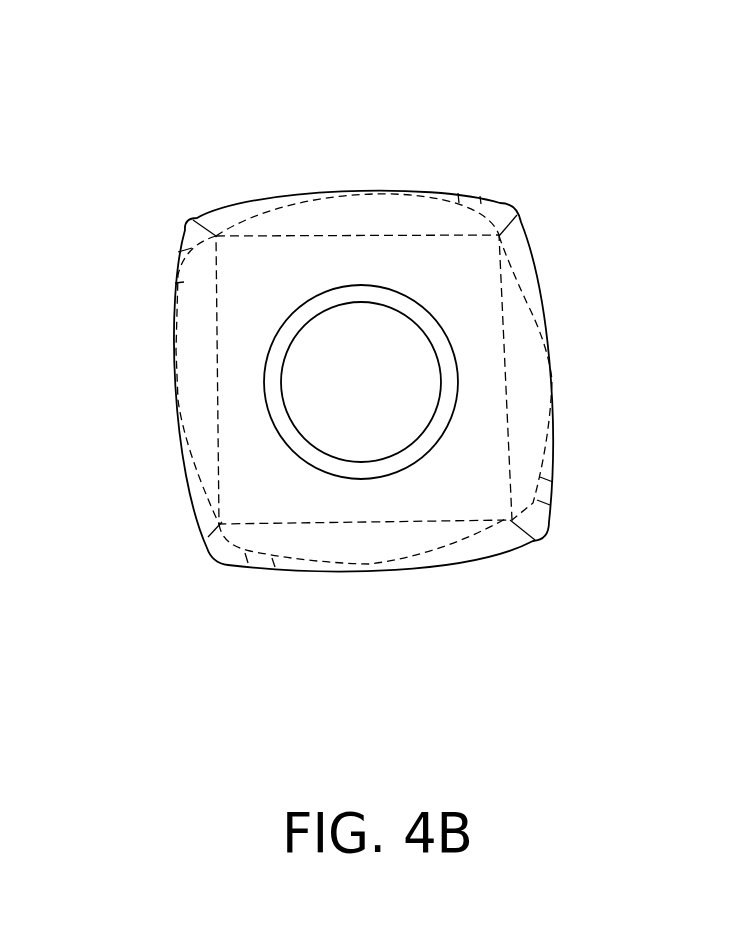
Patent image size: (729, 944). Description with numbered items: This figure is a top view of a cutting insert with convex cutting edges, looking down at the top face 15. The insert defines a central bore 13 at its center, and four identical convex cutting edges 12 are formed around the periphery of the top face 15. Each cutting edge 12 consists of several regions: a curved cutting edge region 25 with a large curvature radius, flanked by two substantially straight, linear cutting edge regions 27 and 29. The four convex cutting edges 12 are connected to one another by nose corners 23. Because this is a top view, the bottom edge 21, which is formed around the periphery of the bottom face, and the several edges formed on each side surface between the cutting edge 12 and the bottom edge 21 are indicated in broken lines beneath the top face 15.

The cutting edge 12 is at (282, 197).
The central bore 13 is at (363, 301).
The top face 15 is at (517, 267).
The bottom edge 21 is at (347, 233).
The nose corner 23 is at (183, 227).
The curved cutting edge region 25 is at (305, 195).
The straight cutting edge region 27 is at (178, 252).
The straight cutting edge region 29 is at (175, 283).